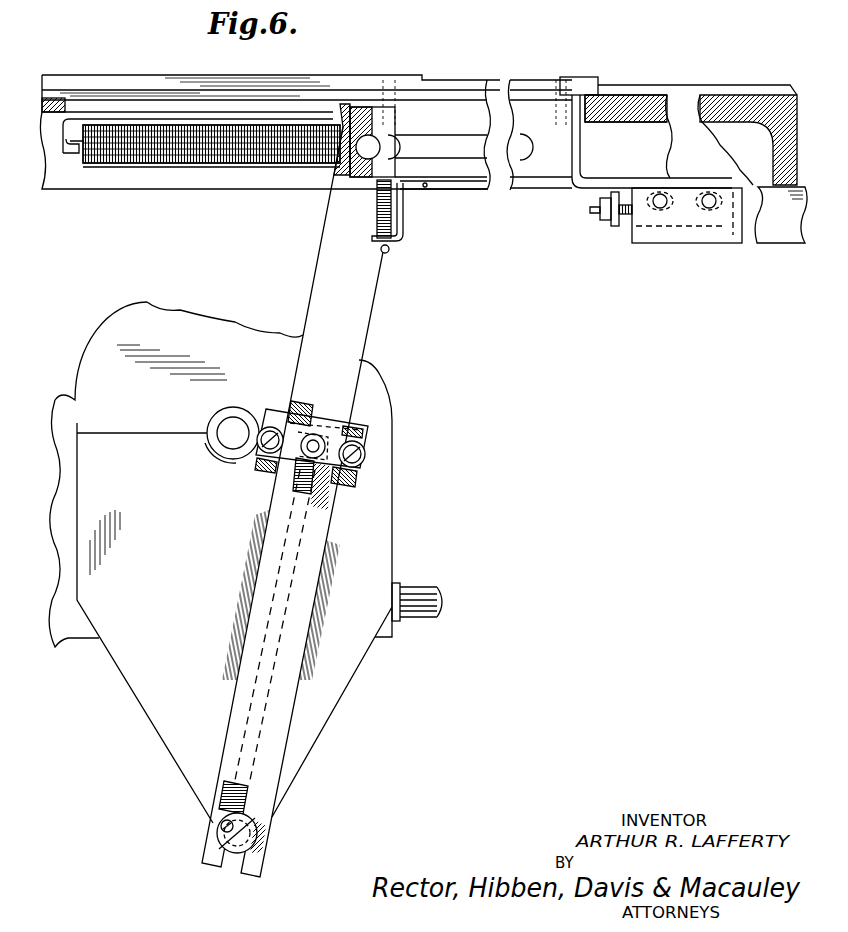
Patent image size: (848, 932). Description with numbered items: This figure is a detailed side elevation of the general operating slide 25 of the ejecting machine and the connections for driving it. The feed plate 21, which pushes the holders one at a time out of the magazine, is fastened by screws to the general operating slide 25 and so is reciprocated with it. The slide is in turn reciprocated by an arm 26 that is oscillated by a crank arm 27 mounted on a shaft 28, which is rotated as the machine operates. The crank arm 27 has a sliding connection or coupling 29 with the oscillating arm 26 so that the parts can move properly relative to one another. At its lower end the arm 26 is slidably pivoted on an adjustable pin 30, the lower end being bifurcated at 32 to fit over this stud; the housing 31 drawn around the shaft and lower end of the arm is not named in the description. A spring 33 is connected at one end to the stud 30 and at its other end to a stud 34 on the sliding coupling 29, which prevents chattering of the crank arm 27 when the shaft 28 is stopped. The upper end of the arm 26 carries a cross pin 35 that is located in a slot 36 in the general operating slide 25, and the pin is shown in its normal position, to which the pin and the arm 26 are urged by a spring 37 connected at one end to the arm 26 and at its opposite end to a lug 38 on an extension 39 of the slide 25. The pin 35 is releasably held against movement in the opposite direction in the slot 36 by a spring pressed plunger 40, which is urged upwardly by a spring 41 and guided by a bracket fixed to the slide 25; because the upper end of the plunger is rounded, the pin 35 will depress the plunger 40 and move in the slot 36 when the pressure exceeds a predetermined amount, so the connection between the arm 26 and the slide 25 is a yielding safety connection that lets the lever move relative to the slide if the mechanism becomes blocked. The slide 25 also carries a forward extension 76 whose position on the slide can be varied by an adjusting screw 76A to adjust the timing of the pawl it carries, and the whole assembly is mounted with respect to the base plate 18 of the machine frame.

The base plate 18 is at (708, 103).
The feed plate 21 is at (523, 82).
The general operating slide 25 is at (516, 118).
The arm 26 is at (362, 306).
The crank arm 27 is at (258, 418).
The shaft 28 is at (221, 432).
The sliding connection or coupling 29 is at (302, 422).
The adjustable pin 30 is at (257, 835).
The lower housing 31 is at (385, 548).
The bifurcated lower end 32 is at (248, 798).
The spring 33 is at (303, 493).
The stud 34 is at (292, 450).
The cross pin 35 is at (378, 136).
The slot 36 is at (457, 140).
The spring 37 is at (190, 160).
The lug 38 is at (74, 152).
The extension 39 is at (124, 119).
The spring pressed plunger 40 is at (394, 147).
The spring 41 is at (378, 214).
The forward extension 76 is at (773, 233).
The adjusting screw 76A is at (596, 209).